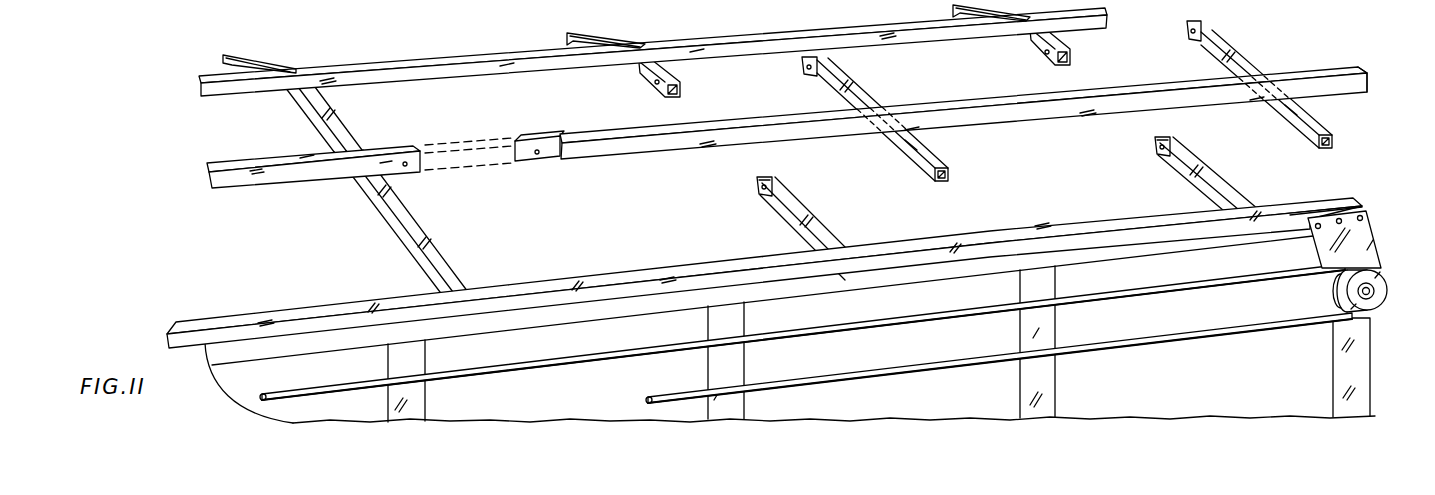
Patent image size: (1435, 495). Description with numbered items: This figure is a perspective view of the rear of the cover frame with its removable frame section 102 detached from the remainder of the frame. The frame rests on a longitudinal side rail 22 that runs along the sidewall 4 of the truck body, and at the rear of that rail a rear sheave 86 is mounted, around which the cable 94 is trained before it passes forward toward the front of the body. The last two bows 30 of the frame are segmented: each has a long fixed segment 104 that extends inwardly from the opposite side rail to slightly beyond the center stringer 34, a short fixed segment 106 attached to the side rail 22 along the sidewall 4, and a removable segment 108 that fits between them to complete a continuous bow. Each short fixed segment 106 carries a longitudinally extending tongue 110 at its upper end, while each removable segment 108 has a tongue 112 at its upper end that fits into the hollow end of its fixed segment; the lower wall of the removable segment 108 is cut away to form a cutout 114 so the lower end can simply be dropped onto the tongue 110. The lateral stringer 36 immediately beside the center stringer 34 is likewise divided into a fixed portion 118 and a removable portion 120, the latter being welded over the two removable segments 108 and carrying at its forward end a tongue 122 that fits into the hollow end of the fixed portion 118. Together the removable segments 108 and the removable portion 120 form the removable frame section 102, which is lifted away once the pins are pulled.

The sidewall 4 is at (978, 397).
The longitudinal side rail 22 is at (532, 292).
The bow 30 is at (333, 128).
The center stringer 34 is at (248, 97).
The lateral stringer 36 is at (207, 184).
The rear sheave 86 is at (1376, 309).
The cable 94 is at (1168, 292).
The removable frame section 102 is at (1306, 63).
The fixed segment 104 is at (642, 70).
The fixed segment 106 is at (826, 229).
The cross bar portion 108 is at (923, 155).
The tongue 110 is at (760, 197).
The tongue 112 is at (817, 64).
The cutout 114 is at (934, 184).
The fixed portion 118 is at (262, 183).
The removable portion 120 is at (660, 151).
The tongue 122 is at (532, 158).